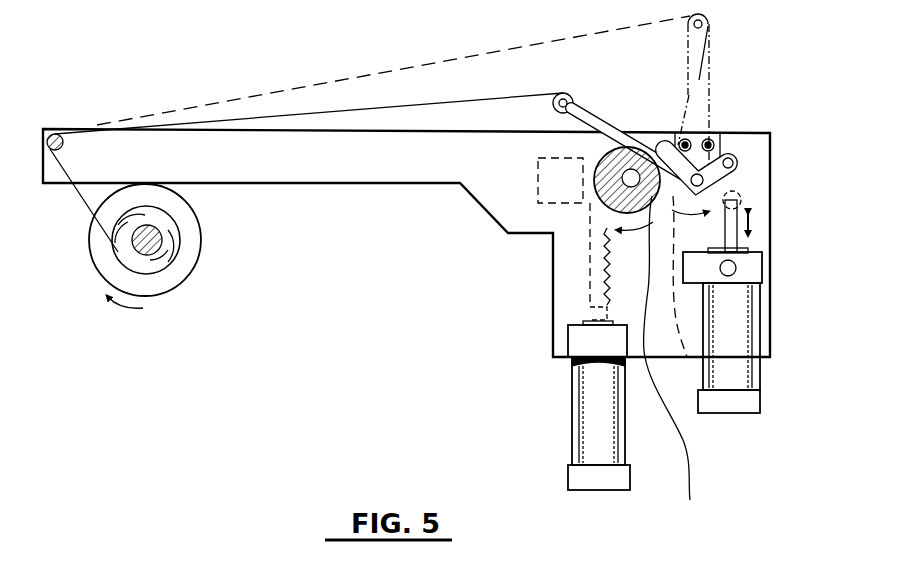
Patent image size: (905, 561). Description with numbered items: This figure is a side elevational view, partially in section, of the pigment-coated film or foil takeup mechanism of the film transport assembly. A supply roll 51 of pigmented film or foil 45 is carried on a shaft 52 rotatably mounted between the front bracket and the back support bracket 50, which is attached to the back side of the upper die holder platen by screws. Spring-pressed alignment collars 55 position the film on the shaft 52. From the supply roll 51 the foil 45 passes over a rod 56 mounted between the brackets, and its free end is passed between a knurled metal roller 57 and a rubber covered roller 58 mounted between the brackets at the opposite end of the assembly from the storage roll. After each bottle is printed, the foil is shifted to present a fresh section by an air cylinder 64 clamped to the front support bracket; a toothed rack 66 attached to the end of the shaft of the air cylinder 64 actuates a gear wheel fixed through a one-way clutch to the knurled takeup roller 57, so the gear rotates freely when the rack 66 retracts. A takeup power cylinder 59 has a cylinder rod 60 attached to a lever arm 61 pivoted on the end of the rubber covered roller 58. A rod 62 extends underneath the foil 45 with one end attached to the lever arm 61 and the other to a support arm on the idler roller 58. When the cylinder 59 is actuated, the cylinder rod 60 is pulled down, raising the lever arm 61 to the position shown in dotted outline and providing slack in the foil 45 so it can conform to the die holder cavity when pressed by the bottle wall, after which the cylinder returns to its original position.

The pigmented foil or film 45 is at (465, 53).
The back support bracket 50 is at (365, 172).
The supply roll 51 is at (170, 248).
The shaft 52 is at (135, 245).
The alignment collars 55 is at (190, 217).
The rod 56 is at (64, 140).
The knurled metal roller 57 is at (603, 212).
The rubber covered roller 58 is at (728, 140).
The takeup power cylinder 59 is at (735, 370).
The cylinder rod 60 is at (733, 181).
The lever arm 61 is at (603, 120).
The rod 62 is at (575, 95).
The air cylinder 64 is at (590, 425).
The toothed rack 66 is at (592, 273).